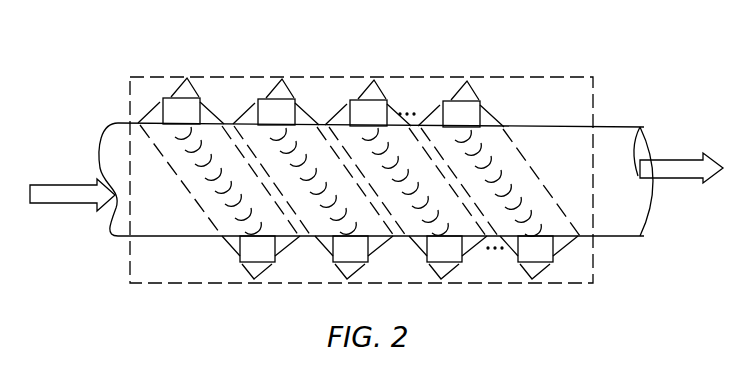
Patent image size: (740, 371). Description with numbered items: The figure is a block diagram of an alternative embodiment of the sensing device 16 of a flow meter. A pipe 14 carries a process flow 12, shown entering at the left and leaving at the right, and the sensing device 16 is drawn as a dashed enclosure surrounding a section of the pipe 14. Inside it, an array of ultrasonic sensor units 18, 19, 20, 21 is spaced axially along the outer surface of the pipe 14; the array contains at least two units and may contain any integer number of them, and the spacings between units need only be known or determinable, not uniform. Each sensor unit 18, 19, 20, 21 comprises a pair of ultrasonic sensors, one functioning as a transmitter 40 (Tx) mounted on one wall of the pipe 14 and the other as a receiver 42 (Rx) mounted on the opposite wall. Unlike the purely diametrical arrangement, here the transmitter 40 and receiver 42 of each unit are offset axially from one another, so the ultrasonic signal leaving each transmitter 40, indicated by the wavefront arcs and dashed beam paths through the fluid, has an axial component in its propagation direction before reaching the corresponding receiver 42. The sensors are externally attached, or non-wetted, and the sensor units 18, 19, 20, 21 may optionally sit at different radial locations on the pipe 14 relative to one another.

The process flow 12 is at (64, 185).
The pipe 14 is at (627, 127).
The sensing device 16 is at (598, 88).
The ultrasonic sensor unit 18 is at (199, 82).
The ultrasonic sensor unit 19 is at (292, 88).
The ultrasonic sensor unit 20 is at (384, 89).
The ultrasonic sensor unit 21 is at (477, 90).
The transmitter 40 is at (173, 95).
The receiver 42 is at (254, 279).